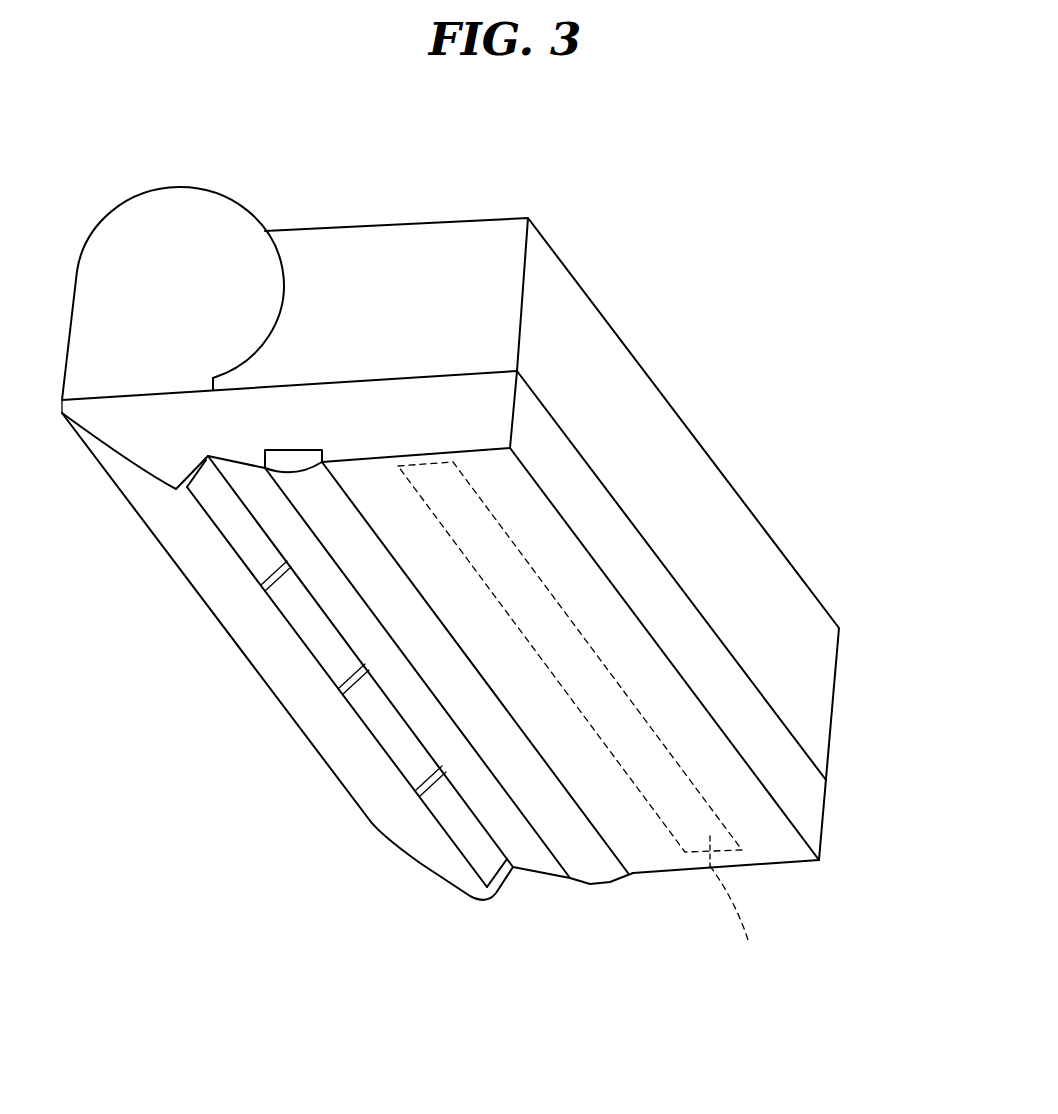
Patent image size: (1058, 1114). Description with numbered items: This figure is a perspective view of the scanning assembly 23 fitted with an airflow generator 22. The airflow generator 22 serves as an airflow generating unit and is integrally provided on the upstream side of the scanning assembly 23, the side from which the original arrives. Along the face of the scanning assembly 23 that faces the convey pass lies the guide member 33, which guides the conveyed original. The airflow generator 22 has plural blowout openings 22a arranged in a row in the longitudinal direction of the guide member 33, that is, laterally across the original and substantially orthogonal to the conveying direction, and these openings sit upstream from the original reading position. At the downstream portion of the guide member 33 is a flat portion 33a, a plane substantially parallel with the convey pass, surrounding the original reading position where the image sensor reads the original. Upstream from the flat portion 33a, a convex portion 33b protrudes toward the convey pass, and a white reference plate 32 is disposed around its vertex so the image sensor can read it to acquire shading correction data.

The airflow generator 22 is at (127, 267).
The blowout openings 22a is at (462, 818).
The scanning assembly 23 is at (453, 268).
The white reference plate 32 is at (590, 868).
The guide member 33 is at (595, 512).
The flat portion 33a is at (572, 732).
The convex portion 33b is at (547, 863).